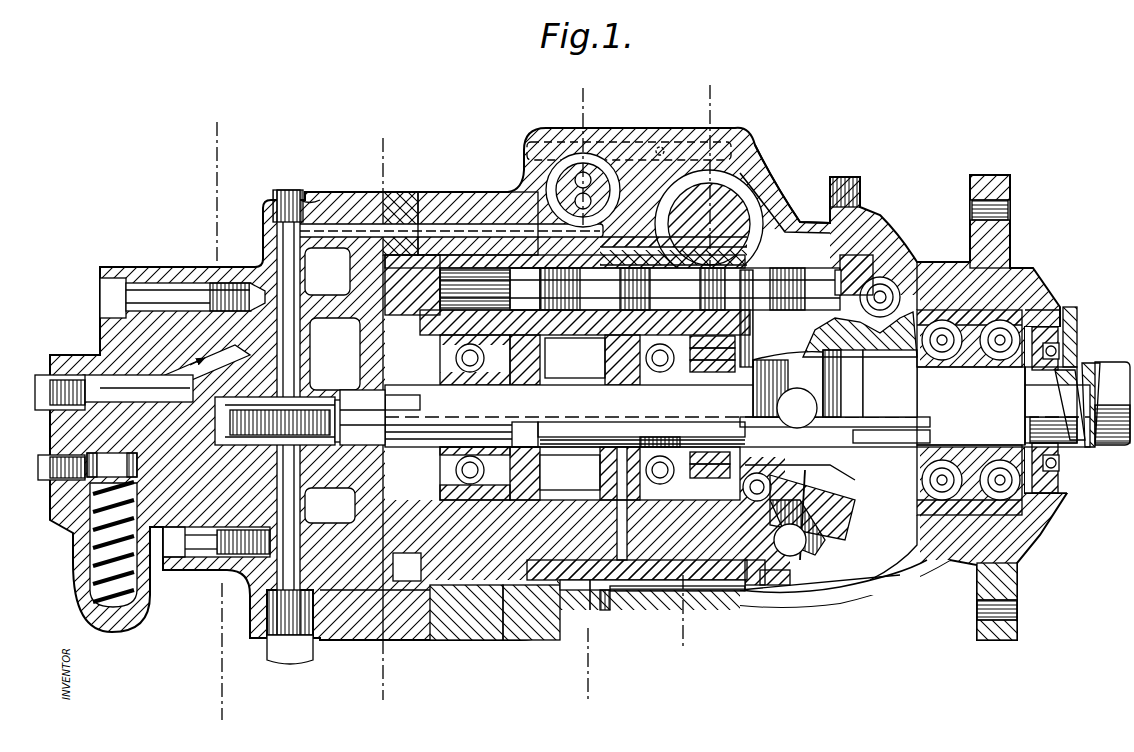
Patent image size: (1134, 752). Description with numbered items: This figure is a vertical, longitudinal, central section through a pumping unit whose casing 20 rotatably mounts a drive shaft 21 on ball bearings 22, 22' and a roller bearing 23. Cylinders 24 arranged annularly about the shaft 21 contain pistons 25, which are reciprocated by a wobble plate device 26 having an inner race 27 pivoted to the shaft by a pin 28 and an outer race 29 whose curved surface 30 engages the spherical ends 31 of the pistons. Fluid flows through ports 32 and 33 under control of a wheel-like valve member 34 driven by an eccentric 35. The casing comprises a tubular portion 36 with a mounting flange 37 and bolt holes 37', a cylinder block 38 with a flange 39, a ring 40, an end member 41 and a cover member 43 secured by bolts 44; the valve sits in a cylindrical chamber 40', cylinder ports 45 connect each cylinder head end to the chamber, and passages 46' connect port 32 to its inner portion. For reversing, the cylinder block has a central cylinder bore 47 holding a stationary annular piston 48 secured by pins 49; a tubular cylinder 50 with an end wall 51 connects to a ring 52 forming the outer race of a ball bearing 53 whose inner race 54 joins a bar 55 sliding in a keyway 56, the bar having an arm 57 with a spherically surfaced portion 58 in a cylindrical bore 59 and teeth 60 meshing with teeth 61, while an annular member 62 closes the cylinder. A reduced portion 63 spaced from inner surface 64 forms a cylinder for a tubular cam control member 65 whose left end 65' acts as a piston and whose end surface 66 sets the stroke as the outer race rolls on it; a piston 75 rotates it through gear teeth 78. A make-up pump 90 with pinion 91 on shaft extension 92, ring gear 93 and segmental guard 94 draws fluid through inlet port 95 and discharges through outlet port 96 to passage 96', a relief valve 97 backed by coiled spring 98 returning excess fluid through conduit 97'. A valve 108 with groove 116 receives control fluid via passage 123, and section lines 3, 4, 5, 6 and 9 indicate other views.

The casing 20 is at (842, 606).
The drive shaft 21 is at (1112, 445).
The ball bearing 22 is at (969, 373).
The ball bearing 22' is at (1053, 370).
The roller bearing 23 is at (335, 354).
The cylinders 24 is at (565, 283).
The pistons 25 is at (792, 265).
The wobble plate device 26 is at (785, 590).
The inner race 27 is at (810, 535).
The pin 28 is at (835, 389).
The outer race 29 is at (883, 275).
The curved surface 30 is at (835, 317).
The spherical ends 31 is at (836, 270).
The fluid port 32 is at (340, 470).
The fluid port 33 is at (330, 255).
The valve member 34 is at (447, 632).
The eccentric 35 is at (398, 396).
The tubular portion 36 is at (605, 612).
The flange 37 is at (995, 209).
The bolt holes 37' is at (1014, 205).
The cylinder block 38 is at (500, 630).
The flange 39 is at (435, 200).
The ring 40 is at (377, 640).
The cylindrical chamber 40' is at (407, 567).
The end member 41 is at (305, 640).
The cover member 43 is at (135, 278).
The bolts 44 is at (178, 285).
The cylinder ports 45 is at (475, 291).
The passages 46' is at (330, 505).
The central cylinder bore 47 is at (710, 474).
The stationary annular piston 48 is at (575, 358).
The pins 49 is at (630, 612).
The tubular cylinder 50 is at (525, 370).
The end wall 51 is at (650, 370).
The ring 52 is at (712, 344).
The ball bearing 53 is at (712, 356).
The inner race 54 is at (712, 369).
The bar 55 is at (710, 461).
The keyway 56 is at (592, 430).
The arm 57 is at (790, 468).
The spherically surfaced portion 58 is at (820, 505).
The cylindrical bore 59 is at (760, 473).
The teeth 60 is at (665, 437).
The teeth 61 is at (690, 437).
The annular member 62 is at (590, 473).
The reduced portion 63 is at (640, 594).
The inner surface 64 is at (560, 600).
The tubular cam control member 65 is at (771, 612).
The left hand end 65' is at (525, 289).
The end surface 66 is at (752, 590).
The piston 75 is at (735, 195).
The gear teeth 78 is at (748, 272).
The make-up pump 90 is at (138, 389).
The pinion 91 is at (339, 421).
The extension 92 is at (145, 394).
The ring gear 93 is at (275, 421).
The segmental guard 94 is at (203, 583).
The inlet port 95 is at (253, 583).
The outlet port 96 is at (207, 365).
The passage 96' is at (75, 338).
The make-up pump relief valve 97 is at (43, 393).
The conduit 97' is at (43, 452).
The coiled spring 98 is at (120, 577).
The valve 108 is at (600, 170).
The groove 116 is at (661, 147).
The passage 123 is at (327, 250).
The section line 3 is at (558, 103).
The section line 4 is at (687, 107).
The section line 5 is at (413, 157).
The section line 6 is at (243, 140).
The section line 9 is at (195, 185).